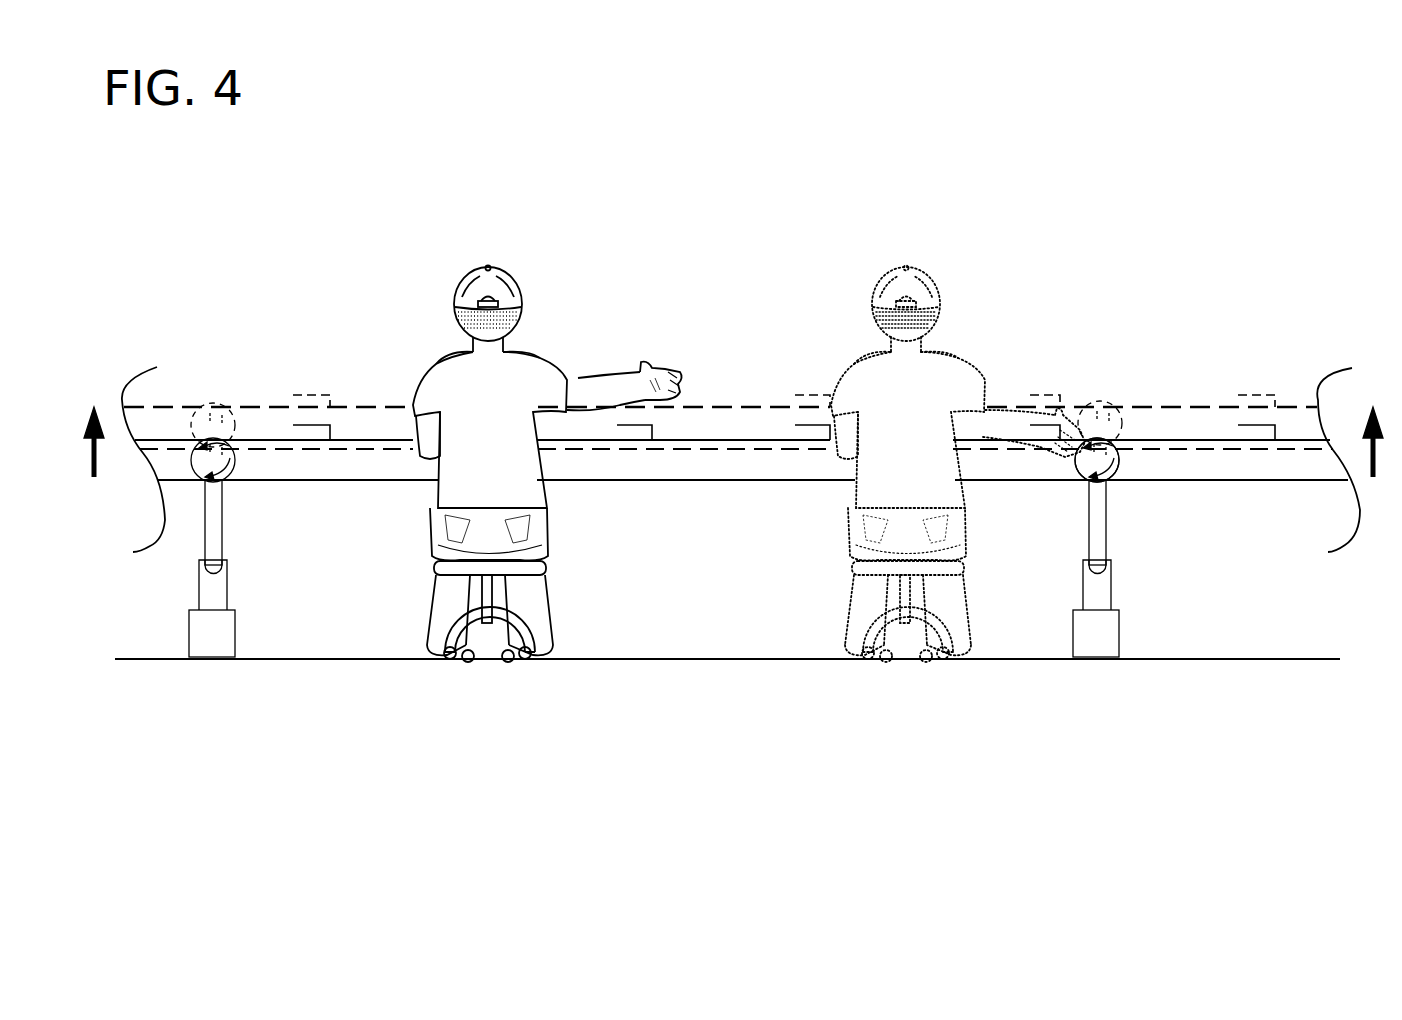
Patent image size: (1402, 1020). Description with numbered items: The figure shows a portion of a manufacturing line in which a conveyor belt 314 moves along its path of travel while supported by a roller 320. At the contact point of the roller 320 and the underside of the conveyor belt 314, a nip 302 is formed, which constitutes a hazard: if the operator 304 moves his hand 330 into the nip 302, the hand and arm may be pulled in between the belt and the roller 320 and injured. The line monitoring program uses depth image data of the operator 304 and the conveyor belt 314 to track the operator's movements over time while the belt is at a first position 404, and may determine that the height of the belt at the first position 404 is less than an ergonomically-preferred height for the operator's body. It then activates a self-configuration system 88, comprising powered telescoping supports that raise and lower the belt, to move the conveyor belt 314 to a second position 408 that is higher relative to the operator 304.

The self-configuration system 88 is at (240, 566).
The nip 302 is at (1073, 412).
The operator 304 is at (472, 459).
The conveyor belt 314 is at (760, 440).
The roller 320 is at (1120, 463).
The hand 330 is at (1043, 447).
The first position 404 is at (290, 486).
The second position 408 is at (268, 400).